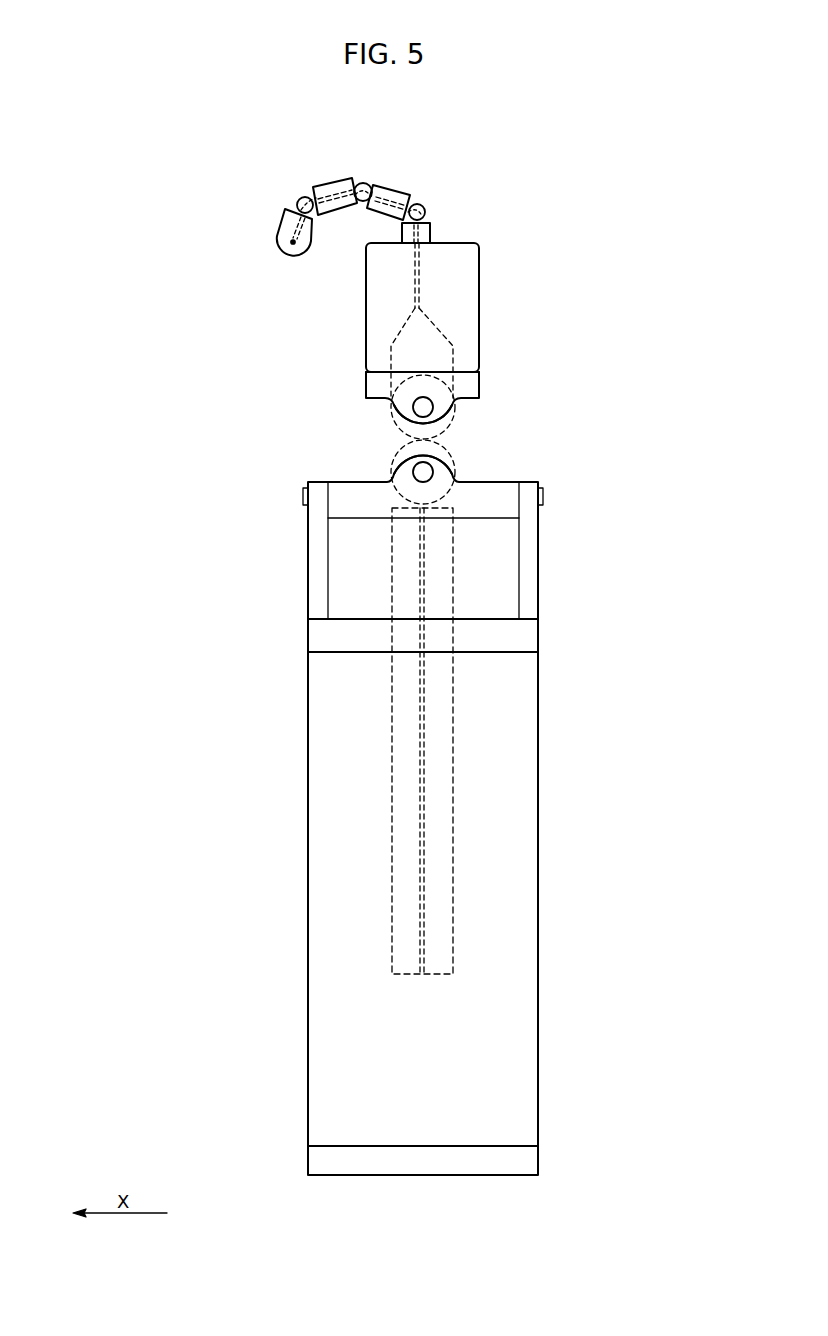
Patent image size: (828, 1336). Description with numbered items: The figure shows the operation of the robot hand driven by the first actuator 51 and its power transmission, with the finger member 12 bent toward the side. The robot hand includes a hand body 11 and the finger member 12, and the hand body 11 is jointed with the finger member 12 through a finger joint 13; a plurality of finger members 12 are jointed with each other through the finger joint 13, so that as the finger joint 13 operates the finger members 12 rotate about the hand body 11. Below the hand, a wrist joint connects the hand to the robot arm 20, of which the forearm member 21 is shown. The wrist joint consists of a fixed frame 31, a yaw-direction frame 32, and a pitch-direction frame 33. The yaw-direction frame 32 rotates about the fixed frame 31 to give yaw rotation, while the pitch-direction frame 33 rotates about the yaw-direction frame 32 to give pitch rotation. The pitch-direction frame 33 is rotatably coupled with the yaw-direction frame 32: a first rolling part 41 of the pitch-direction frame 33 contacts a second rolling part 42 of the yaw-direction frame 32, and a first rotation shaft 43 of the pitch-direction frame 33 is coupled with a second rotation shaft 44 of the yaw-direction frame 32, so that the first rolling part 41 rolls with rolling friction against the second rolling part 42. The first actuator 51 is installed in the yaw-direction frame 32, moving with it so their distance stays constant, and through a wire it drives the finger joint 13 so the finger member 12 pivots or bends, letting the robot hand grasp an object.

The hand body 11 is at (479, 293).
The finger member 12 is at (340, 188).
The finger joint 13 is at (364, 185).
The robot arm 20 is at (457, 812).
The forearm member 21 is at (530, 1160).
The fixed frame 31 is at (318, 636).
The yaw-direction frame 32 is at (353, 484).
The pitch-direction frame 33 is at (377, 383).
The first rolling part 41 is at (437, 437).
The second rolling part 42 is at (438, 443).
The first rotation shaft 43 is at (418, 408).
The second rotation shaft 44 is at (420, 468).
The first actuator 51 is at (458, 770).